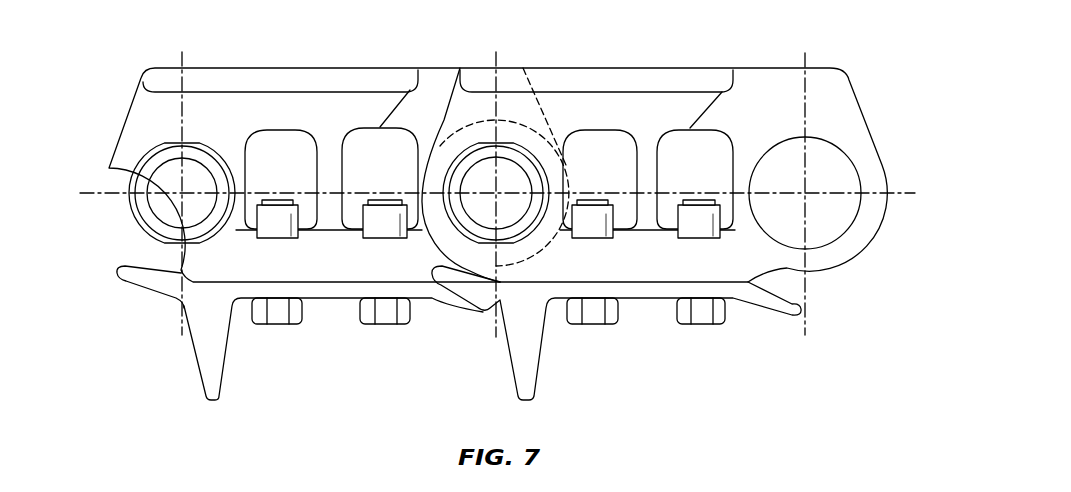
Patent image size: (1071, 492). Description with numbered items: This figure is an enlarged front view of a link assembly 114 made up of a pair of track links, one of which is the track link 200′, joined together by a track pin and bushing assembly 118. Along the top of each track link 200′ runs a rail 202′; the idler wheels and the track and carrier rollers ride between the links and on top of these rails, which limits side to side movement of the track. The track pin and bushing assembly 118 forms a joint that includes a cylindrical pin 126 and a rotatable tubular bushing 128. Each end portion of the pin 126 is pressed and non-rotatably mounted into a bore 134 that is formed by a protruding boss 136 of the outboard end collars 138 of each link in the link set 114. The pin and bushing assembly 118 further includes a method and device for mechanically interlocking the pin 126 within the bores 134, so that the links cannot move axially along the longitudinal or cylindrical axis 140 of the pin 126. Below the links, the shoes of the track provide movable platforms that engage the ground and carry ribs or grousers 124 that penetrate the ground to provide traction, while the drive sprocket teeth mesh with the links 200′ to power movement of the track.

The link assembly 114 is at (858, 92).
The track pin and bushing assembly 118 is at (482, 203).
The grousers 124 is at (207, 368).
The cylindrical pin 126 is at (483, 173).
The rotatable tubular bushing 128 is at (573, 182).
The bore 134 is at (148, 192).
The protruding boss 136 is at (202, 232).
The outboard end collars 138 is at (120, 218).
The longitudinal or cylindrical axis 140 is at (495, 197).
The track link 200′ is at (127, 125).
The rail 202′ is at (277, 66).